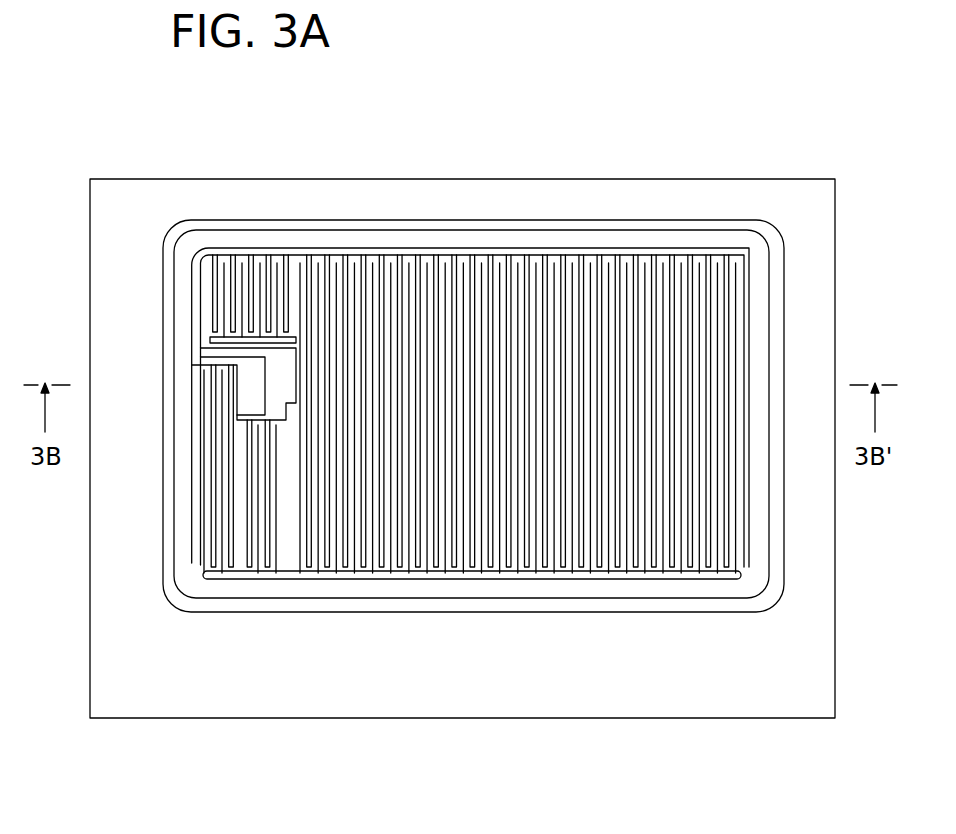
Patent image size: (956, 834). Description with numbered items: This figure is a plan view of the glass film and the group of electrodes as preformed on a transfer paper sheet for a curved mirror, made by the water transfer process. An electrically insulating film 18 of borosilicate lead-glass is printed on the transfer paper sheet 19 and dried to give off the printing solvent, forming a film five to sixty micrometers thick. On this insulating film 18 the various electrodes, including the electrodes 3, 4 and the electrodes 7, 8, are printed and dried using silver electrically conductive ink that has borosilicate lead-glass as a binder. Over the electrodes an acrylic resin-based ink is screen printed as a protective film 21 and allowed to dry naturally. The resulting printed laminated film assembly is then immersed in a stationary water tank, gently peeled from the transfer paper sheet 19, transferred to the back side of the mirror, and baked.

The electrode 3 is at (400, 250).
The electrode 4 is at (460, 585).
The electrode 7 is at (566, 280).
The electrode 8 is at (545, 280).
The electrically insulating film 18 is at (572, 590).
The transfer paper sheet 19 is at (179, 207).
The protective film 21 is at (274, 605).